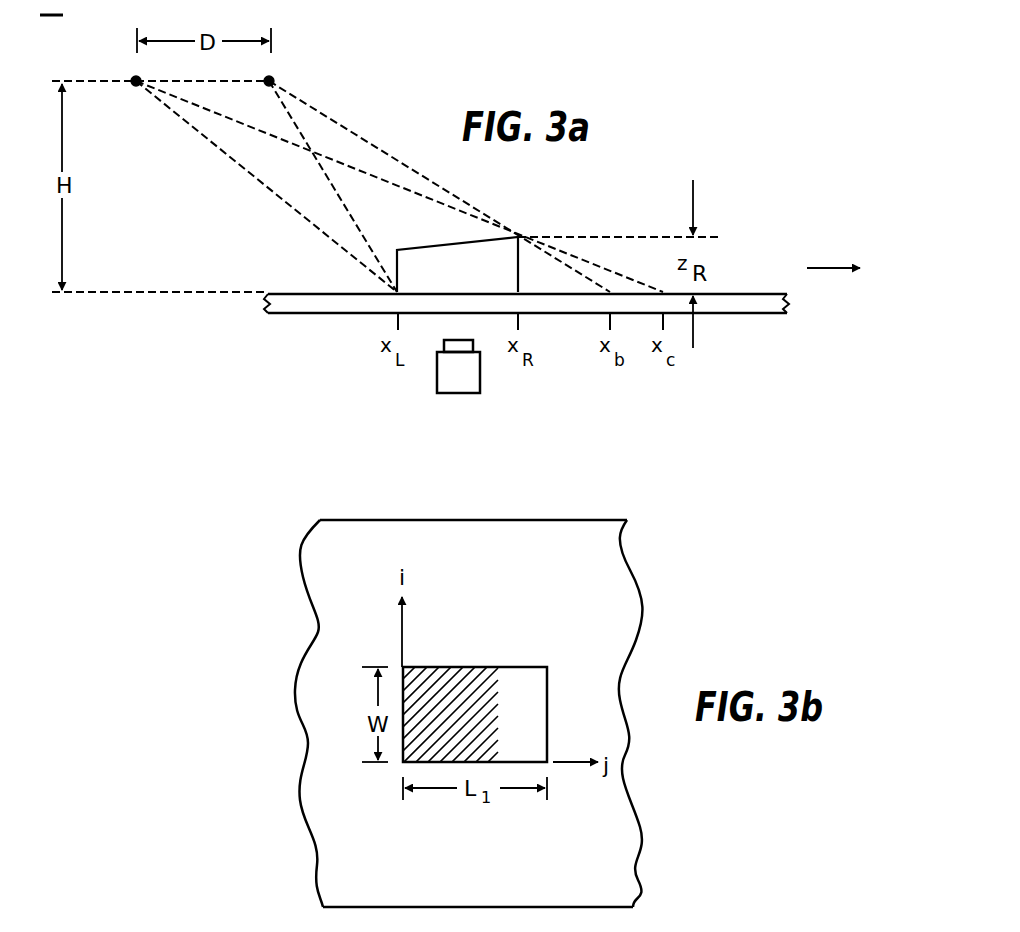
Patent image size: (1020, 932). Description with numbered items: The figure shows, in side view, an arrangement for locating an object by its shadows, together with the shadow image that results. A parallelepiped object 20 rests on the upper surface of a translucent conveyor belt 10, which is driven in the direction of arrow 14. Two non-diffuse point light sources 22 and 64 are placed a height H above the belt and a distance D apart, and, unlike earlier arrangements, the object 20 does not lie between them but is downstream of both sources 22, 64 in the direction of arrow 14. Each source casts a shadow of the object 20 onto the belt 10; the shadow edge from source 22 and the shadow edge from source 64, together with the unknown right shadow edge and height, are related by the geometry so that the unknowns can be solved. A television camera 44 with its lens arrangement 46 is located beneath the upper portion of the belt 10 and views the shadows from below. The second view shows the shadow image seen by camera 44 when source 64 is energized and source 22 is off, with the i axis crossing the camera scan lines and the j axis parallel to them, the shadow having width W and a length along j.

The first non-diffuse light source 22 is at (134, 79).
The point light source 64 is at (272, 80).
The parallelepiped object 20 is at (428, 250).
The conveyor belt 10 is at (757, 292).
The arrow indicating direction of belt travel 14 is at (830, 263).
The television camera 44 is at (481, 375).
The lens arrangement 46 is at (443, 345).